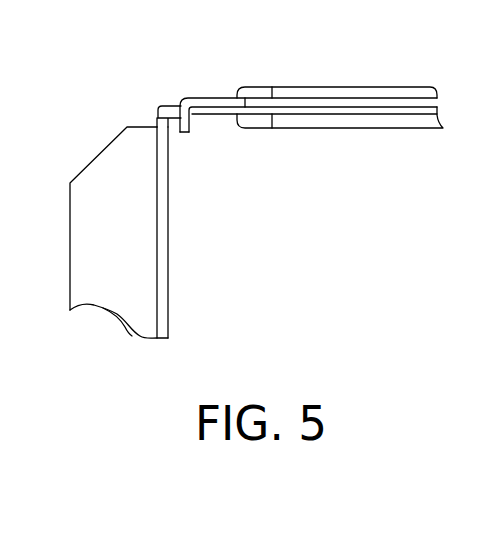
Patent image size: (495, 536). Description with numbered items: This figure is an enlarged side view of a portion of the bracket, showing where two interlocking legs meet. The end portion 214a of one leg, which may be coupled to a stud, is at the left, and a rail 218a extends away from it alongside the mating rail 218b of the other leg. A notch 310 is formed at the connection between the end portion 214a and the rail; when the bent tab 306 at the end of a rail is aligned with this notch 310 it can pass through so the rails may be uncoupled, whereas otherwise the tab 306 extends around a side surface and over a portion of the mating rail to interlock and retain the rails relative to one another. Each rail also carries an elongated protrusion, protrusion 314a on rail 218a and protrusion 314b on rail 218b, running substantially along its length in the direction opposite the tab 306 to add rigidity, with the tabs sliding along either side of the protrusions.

The end portion 214a is at (181, 286).
The notch 310 is at (158, 108).
The tab 306 is at (192, 124).
The rail 218a is at (337, 110).
The mating rail 218b is at (307, 98).
The elongated protrusion 314a is at (403, 122).
The elongated protrusion 314b is at (393, 87).